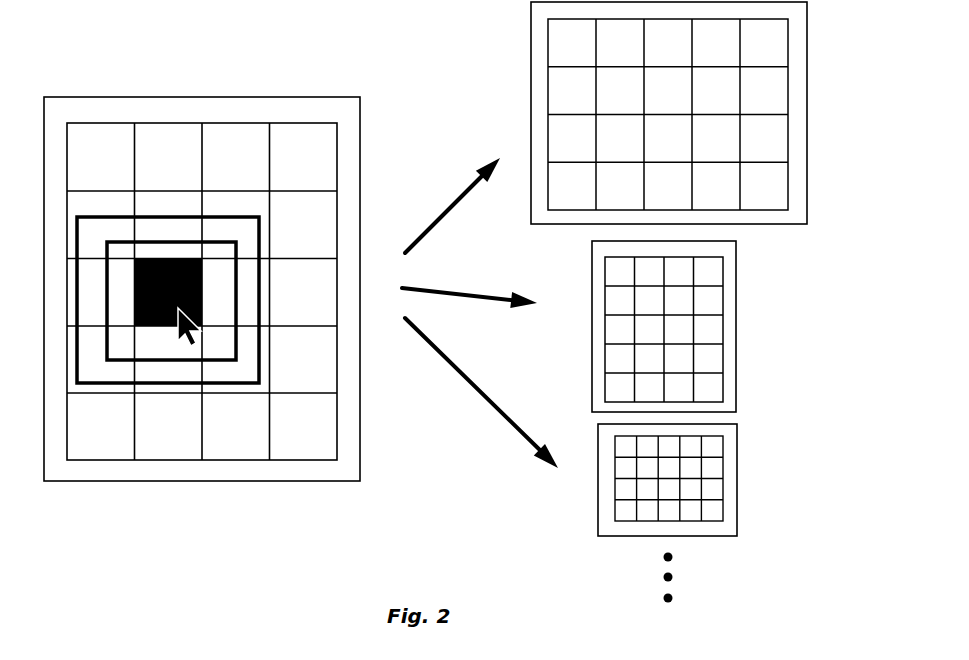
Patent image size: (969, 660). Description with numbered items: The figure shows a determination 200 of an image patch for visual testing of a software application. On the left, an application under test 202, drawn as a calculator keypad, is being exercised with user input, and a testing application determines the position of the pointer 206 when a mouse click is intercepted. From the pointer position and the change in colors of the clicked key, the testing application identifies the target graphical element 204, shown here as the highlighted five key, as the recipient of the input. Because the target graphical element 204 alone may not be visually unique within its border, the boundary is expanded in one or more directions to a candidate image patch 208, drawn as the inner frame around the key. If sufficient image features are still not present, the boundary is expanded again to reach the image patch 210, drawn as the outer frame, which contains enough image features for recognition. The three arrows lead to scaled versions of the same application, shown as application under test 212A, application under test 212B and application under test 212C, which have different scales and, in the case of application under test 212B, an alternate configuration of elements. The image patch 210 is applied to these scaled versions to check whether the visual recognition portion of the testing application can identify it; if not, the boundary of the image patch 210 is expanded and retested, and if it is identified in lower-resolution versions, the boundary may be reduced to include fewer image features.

The determination of image patch 200 is at (876, 29).
The application under test 202 is at (328, 98).
The target graphical element 204 is at (133, 272).
The pointer 206 is at (193, 345).
The candidate image patch 208 is at (193, 360).
The image patch 210 is at (243, 383).
The application under test 212A is at (805, 118).
The application under test 212B is at (737, 288).
The application under test 212C is at (737, 443).